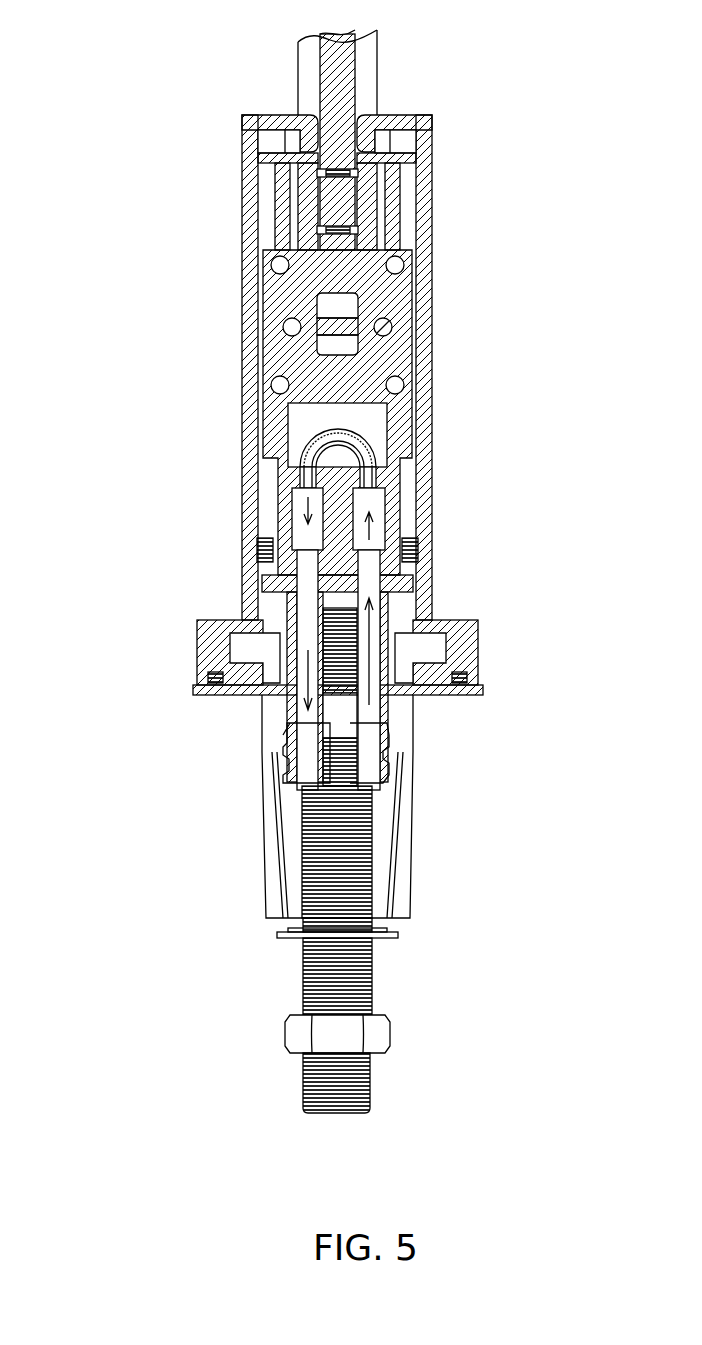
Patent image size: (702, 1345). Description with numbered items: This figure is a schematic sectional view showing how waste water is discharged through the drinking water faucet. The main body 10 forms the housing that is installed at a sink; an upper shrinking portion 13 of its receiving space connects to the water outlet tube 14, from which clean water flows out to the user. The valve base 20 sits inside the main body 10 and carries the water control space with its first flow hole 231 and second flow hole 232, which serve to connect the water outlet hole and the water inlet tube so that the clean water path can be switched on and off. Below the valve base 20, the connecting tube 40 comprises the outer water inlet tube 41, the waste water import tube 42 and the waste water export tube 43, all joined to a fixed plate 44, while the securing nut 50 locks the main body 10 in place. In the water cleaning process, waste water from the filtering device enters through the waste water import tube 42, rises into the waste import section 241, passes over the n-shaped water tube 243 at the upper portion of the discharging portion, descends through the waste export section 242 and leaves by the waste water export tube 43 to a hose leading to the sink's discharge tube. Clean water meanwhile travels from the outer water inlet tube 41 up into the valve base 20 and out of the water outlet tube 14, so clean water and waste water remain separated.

The main body 10 is at (233, 315).
The shrinking portion 13 is at (273, 117).
The water outlet tube 14 is at (370, 63).
The valve base 20 is at (338, 364).
The first flow hole 231 is at (342, 305).
The second flow hole 232 is at (332, 348).
The n-shaped water tube 243 is at (365, 435).
The waste export section 242 is at (290, 497).
The waste import section 241 is at (372, 512).
The fixed plate 44 is at (402, 588).
The securing nut 50 is at (213, 653).
The waste water export tube 43 is at (300, 718).
The waste water import tube 42 is at (368, 712).
The connecting tube 40 is at (422, 857).
The outer water inlet tube 41 is at (307, 970).